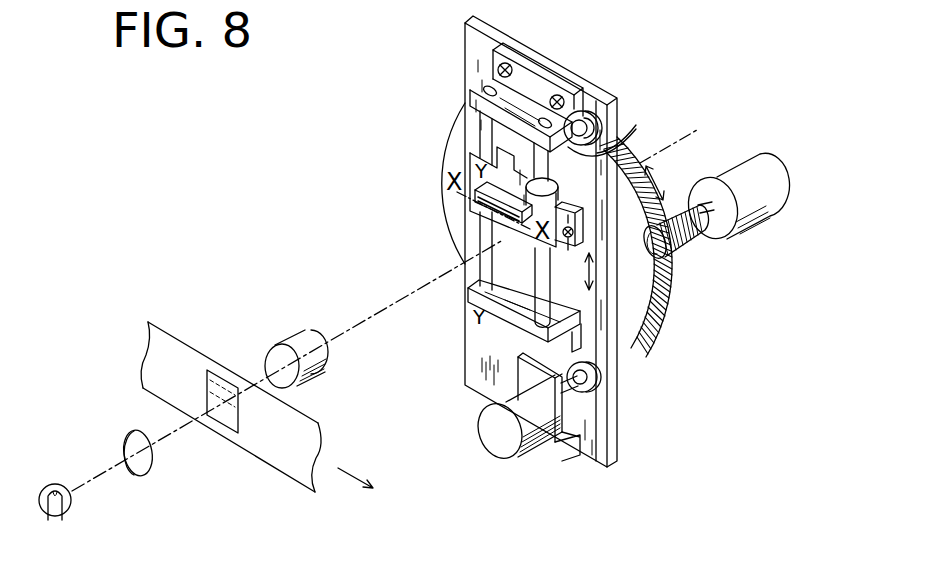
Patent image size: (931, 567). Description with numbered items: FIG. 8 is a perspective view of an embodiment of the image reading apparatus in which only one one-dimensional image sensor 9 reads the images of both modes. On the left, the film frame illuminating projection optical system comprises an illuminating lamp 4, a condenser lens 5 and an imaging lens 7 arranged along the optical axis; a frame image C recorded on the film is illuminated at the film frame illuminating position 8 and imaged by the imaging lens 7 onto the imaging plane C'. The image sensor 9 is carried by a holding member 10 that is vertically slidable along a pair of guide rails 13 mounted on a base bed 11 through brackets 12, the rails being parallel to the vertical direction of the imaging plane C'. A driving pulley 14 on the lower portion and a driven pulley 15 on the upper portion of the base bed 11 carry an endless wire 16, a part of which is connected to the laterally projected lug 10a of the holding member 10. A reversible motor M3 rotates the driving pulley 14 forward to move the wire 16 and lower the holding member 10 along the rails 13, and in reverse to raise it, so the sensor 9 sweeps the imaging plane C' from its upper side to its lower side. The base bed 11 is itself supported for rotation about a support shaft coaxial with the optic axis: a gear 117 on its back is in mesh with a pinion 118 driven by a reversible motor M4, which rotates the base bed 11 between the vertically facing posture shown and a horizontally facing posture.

The illuminating lamp 4 is at (50, 484).
The condenser lens 5 is at (127, 437).
The imaging lens 7 is at (281, 362).
The film frame illuminating position 8 is at (242, 359).
The one-dimensional image sensor 9 is at (505, 202).
The holding member 10 is at (493, 157).
The laterally projected lug 10a is at (668, 296).
The base bed 11 is at (613, 437).
The brackets 12 is at (530, 107).
The guide rails 13 is at (485, 125).
The driving pulley 14 is at (592, 392).
The driven pulley 15 is at (584, 112).
The endless wire 16 is at (639, 128).
The gear 117 is at (662, 332).
The pinion 118 is at (688, 250).
The reversible motor M3 is at (490, 431).
The reversible motor M4 is at (760, 230).
The frame image C is at (217, 376).
The imaging plane C' is at (445, 241).